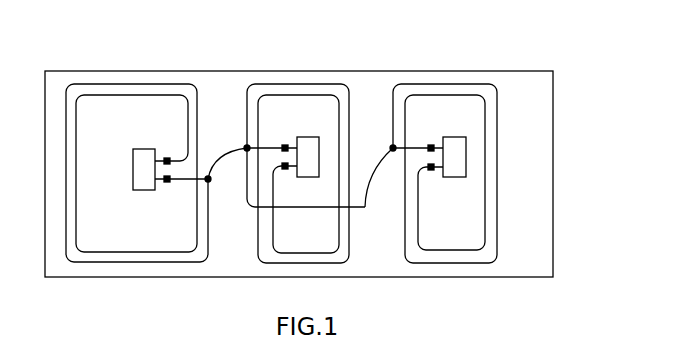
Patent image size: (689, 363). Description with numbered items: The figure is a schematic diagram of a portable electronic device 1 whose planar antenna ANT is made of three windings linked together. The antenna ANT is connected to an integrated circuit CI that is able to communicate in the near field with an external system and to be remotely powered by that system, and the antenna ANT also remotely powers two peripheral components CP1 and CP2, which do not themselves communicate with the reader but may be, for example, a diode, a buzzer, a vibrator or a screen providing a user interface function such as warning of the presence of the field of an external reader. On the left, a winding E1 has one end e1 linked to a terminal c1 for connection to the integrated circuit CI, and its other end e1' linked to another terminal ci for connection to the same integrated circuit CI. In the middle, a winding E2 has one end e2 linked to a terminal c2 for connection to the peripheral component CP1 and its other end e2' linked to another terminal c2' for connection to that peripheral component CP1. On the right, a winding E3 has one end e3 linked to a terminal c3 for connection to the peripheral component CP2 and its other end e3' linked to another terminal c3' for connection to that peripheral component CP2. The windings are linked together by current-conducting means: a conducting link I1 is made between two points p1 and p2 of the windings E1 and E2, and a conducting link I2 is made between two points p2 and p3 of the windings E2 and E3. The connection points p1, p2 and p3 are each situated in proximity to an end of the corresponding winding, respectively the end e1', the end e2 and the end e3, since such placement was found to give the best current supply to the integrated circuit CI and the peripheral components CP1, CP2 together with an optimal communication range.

The portable electronic device 1 is at (553, 71).
The planar antenna ANT is at (147, 263).
The winding E1 is at (130, 91).
The winding E2 is at (299, 91).
The winding E3 is at (449, 91).
The integrated circuit CI is at (134, 169).
The peripheral component CP1 is at (315, 146).
The peripheral component CP2 is at (464, 146).
The terminal c1 is at (164, 158).
The terminal ci is at (165, 183).
The end of winding E1 e1 is at (171, 128).
The end of winding E1 e1' is at (181, 203).
The end of winding E2 e2 is at (272, 126).
The end of winding E2 e2' is at (285, 209).
The end of winding E3 e3 is at (418, 126).
The end of winding E3 e3' is at (430, 208).
The terminal c2 is at (303, 127).
The terminal c2' is at (306, 185).
The terminal c3 is at (448, 127).
The terminal c3' is at (453, 186).
The connection point p1 is at (210, 183).
The connection point p2 is at (246, 151).
The connection point p3 is at (394, 151).
The conducting link I1 is at (216, 159).
The conducting link I2 is at (365, 209).